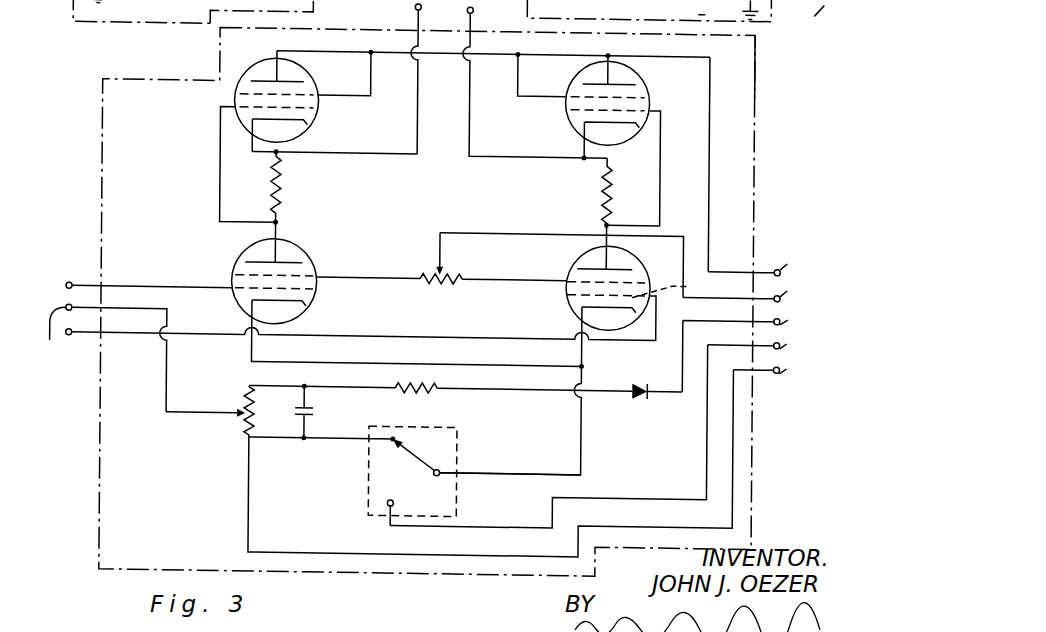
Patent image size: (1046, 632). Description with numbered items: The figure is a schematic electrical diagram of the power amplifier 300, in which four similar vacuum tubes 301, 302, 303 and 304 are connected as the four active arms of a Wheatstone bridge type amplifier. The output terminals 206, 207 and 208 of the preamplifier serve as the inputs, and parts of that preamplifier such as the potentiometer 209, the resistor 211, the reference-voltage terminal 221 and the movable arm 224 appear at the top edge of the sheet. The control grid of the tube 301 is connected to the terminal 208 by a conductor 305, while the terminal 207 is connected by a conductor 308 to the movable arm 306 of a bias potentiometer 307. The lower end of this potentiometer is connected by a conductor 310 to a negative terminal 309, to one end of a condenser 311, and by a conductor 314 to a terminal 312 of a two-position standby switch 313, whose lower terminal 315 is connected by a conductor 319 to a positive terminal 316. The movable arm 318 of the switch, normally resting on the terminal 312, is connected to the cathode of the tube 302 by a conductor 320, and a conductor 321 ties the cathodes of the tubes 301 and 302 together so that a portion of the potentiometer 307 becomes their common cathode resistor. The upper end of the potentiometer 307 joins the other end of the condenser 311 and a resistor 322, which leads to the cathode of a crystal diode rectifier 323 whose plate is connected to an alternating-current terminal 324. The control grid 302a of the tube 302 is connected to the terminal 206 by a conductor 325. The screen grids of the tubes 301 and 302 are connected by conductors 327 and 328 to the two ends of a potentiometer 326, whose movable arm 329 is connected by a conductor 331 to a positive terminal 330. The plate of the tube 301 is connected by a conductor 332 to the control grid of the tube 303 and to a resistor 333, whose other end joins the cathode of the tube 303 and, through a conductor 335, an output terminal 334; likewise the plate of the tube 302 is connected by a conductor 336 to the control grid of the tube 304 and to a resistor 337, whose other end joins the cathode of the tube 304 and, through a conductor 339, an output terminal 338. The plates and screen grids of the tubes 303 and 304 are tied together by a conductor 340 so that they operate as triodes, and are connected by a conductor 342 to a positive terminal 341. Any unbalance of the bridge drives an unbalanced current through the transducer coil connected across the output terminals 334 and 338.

The output terminal 206 is at (107, 346).
The output terminal 207 is at (68, 332).
The output terminal 208 is at (78, 274).
The potentiometer 209 is at (141, 11).
The resistor 211 is at (175, 0).
The terminal 221 is at (808, 23).
The movable arm 224 is at (649, 11).
The power amplifier 300 is at (753, 138).
The power amplifier vacuum tube 301 is at (240, 262).
The power amplifier vacuum tube 302 is at (572, 264).
The control grid 302a is at (693, 288).
The power amplifier vacuum tube 303 is at (316, 130).
The power amplifier vacuum tube 304 is at (582, 133).
The conductor 305 is at (164, 288).
The movable arm 306 is at (204, 411).
The bias potentiometer 307 is at (246, 431).
The conductor 308 is at (167, 394).
The negative terminal 309 is at (781, 365).
The conductor 310 is at (322, 553).
The condenser 311 is at (322, 407).
The terminal 312 is at (390, 448).
The standby switch 313 is at (458, 516).
The conductor 314 is at (316, 442).
The lower terminal 315 is at (389, 505).
The positive terminal 316 is at (769, 339).
The movable arm 318 is at (424, 459).
The conductor 319 is at (577, 499).
The conductor 320 is at (583, 424).
The conductor 321 is at (246, 346).
The resistor 322 is at (427, 393).
The crystal diode rectifier 323 is at (637, 384).
The alternating-current potential terminal 324 is at (756, 344).
The conductor 325 is at (385, 332).
The potentiometer 326 is at (426, 285).
The conductor 327 is at (389, 281).
The conductor 328 is at (510, 281).
The movable arm 329 is at (436, 266).
The positive terminal 330 is at (756, 286).
The conductor 331 is at (525, 233).
The conductor 332 is at (219, 165).
The resistor 333 is at (283, 188).
The output terminal 334 is at (412, 9).
The conductor 335 is at (416, 115).
The conductor 336 is at (659, 177).
The resistor 337 is at (598, 197).
The output terminal 338 is at (471, 13).
The conductor 339 is at (470, 121).
The conductor 340 is at (437, 57).
The positive terminal 341 is at (769, 260).
The conductor 342 is at (707, 72).